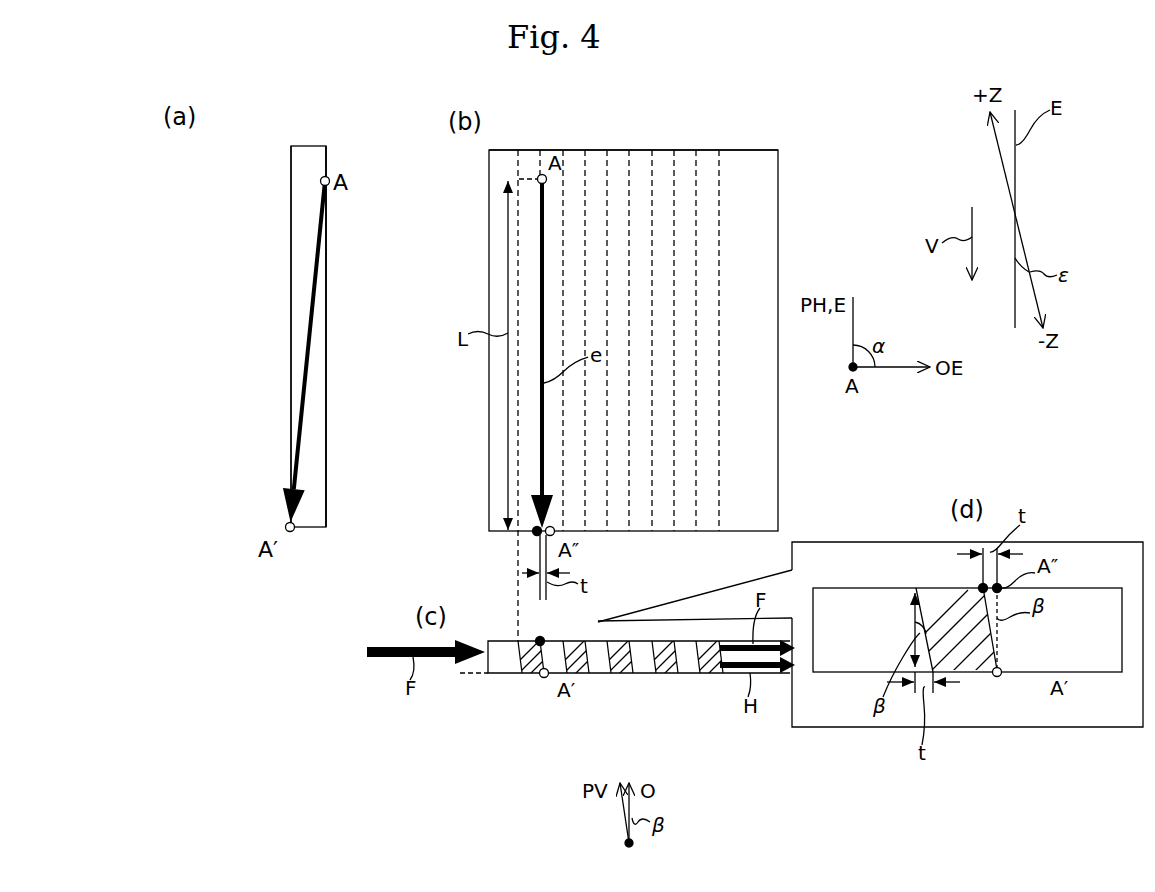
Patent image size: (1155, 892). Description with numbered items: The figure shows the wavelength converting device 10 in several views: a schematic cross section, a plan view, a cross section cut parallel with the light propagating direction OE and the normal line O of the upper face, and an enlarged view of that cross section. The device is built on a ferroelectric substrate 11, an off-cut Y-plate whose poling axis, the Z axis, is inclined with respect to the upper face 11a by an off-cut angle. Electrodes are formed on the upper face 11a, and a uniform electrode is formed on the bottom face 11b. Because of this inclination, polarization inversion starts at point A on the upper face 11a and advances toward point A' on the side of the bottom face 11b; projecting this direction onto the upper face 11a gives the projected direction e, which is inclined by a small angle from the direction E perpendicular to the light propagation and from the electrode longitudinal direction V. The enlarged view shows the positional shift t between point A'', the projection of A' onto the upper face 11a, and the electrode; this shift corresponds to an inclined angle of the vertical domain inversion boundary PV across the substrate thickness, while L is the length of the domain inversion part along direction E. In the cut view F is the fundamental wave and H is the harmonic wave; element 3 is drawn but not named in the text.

The wavelength converting device 10 is at (341, 147).
The ferroelectric substrate 11 is at (326, 316).
The upper face of the ferroelectric substrate 11a is at (326, 272).
The bottom face of the ferroelectric substrate 11b is at (291, 270).
The inclined line / louver element 3 is at (326, 418).